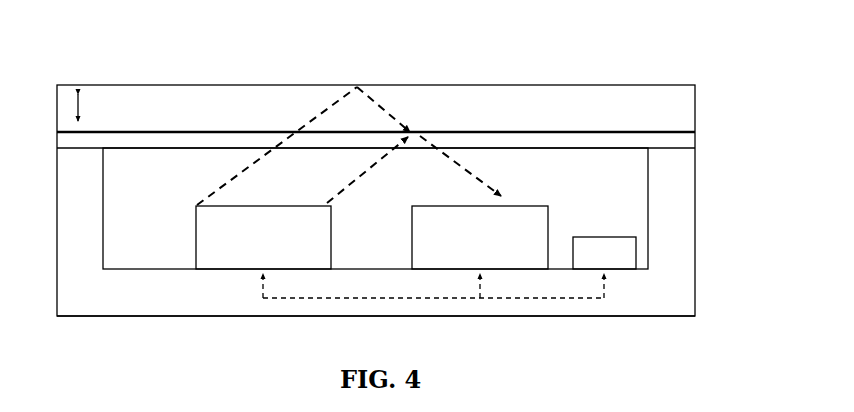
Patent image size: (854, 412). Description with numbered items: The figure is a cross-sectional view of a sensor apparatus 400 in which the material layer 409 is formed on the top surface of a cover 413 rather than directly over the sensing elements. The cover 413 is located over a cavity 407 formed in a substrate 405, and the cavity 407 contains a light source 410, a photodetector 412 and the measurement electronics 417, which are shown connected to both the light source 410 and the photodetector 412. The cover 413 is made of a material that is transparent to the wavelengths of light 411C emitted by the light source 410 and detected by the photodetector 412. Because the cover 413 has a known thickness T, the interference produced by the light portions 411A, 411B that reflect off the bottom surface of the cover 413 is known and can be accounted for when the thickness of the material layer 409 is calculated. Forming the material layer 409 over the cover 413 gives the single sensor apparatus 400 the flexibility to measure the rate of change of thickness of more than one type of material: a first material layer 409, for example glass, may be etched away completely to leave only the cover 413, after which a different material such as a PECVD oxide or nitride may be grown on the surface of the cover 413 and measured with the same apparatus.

The sensor apparatus 400 is at (644, 43).
The substrate 405 is at (376, 303).
The cavity 407 is at (375, 208).
The material layer 409 is at (376, 114).
The light source 410 is at (263, 237).
The light portion 411A is at (326, 110).
The light portion 411B is at (340, 187).
The light 411C is at (463, 170).
The photodetector 412 is at (480, 237).
The cover 413 is at (212, 139).
The measurement electronics 417 is at (617, 271).
The thickness T is at (87, 107).